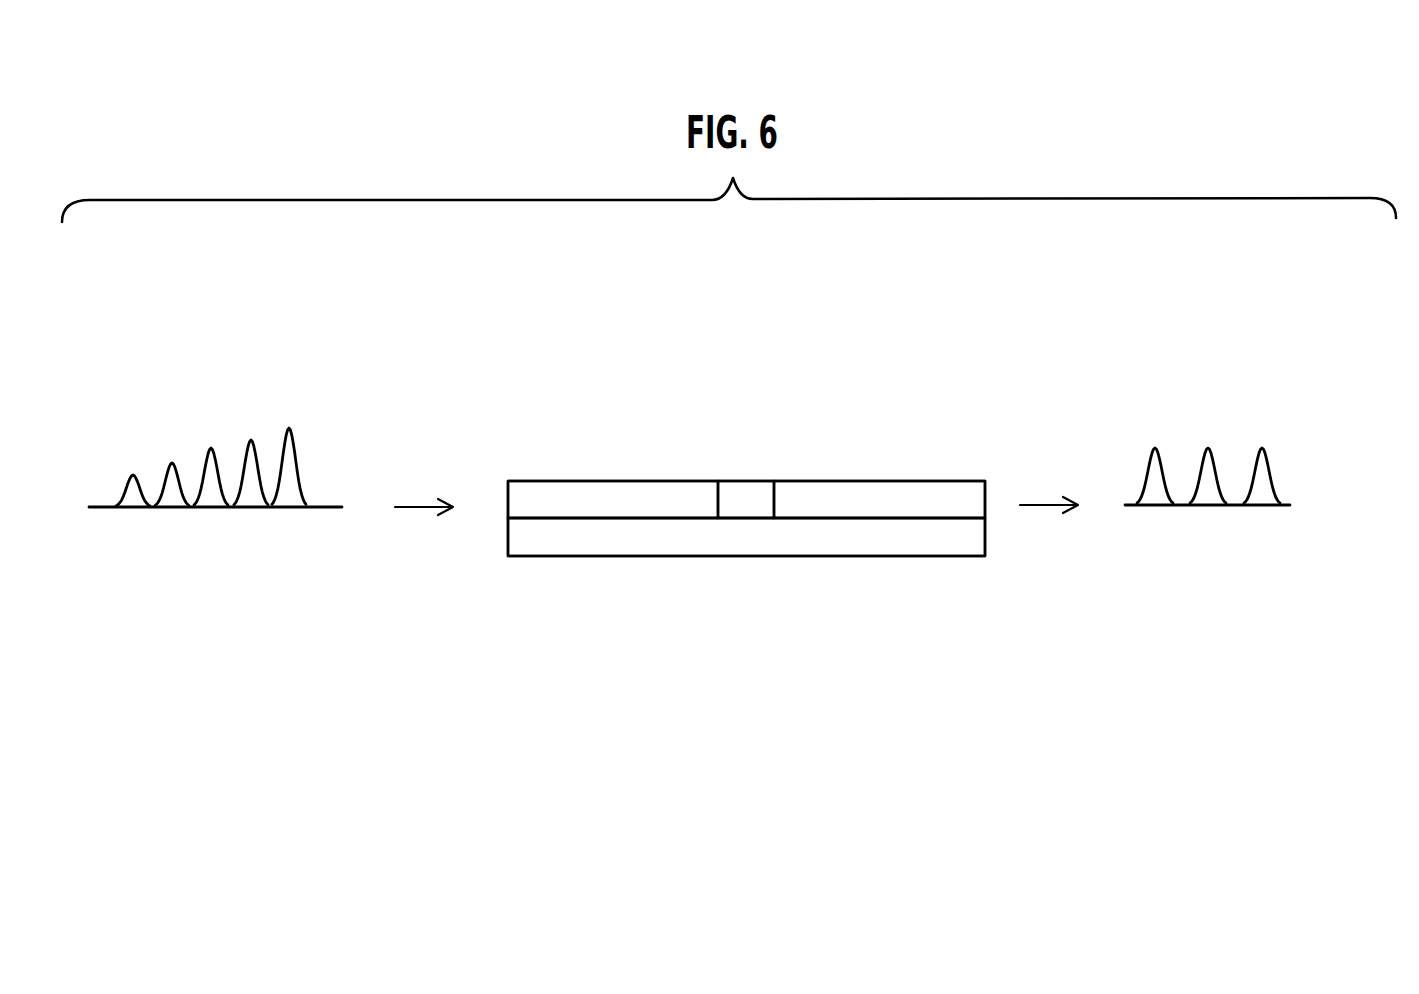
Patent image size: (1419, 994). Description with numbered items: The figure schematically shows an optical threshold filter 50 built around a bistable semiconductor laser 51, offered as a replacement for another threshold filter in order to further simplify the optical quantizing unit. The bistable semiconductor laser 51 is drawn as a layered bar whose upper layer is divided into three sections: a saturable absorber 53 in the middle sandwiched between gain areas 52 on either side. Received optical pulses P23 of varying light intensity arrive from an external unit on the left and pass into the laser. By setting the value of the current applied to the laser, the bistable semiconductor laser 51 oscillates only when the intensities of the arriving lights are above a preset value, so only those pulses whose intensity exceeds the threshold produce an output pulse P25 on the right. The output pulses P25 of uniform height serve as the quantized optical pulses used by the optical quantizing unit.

The optical threshold filter 50 is at (1022, 324).
The bistable semiconductor laser 51 is at (718, 571).
The gain areas 52 is at (607, 488).
The saturable absorber 53 is at (732, 487).
The received optical pulses P23 is at (138, 418).
The output pulse P25 is at (1267, 460).